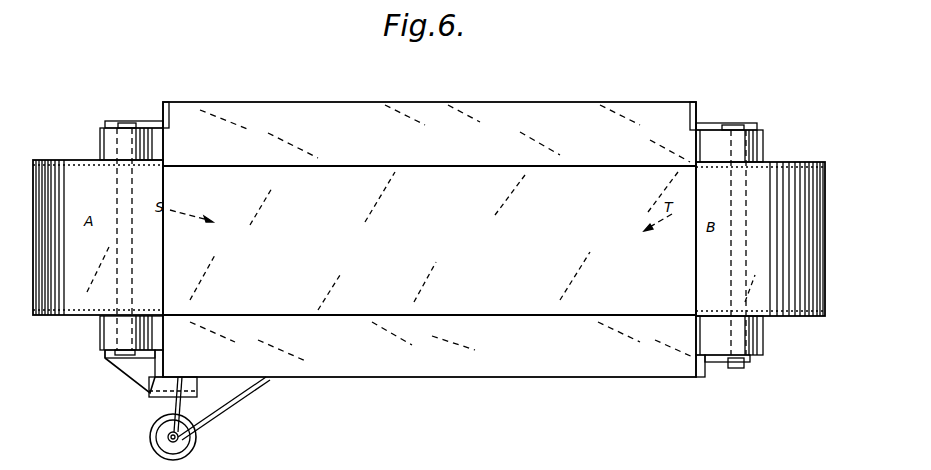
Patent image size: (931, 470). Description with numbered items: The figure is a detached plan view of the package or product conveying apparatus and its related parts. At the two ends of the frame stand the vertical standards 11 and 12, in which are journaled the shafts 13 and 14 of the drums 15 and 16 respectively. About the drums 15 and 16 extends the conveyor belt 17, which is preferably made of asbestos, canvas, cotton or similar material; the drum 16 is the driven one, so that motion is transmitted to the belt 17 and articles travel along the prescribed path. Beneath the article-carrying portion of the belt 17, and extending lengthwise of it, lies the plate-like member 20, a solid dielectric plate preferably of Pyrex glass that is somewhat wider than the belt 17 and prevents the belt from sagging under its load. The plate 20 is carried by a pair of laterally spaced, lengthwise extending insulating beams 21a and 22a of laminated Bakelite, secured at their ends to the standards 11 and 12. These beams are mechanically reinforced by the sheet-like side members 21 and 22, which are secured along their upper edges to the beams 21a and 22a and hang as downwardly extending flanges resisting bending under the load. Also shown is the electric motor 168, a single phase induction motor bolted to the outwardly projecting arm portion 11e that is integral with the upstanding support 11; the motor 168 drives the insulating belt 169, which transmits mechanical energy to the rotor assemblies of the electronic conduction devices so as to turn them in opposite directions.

The vertical standard 11 is at (102, 141).
The outwardly projecting arm portion 11e is at (127, 366).
The vertical standard 12 is at (760, 138).
The shaft 13 is at (126, 122).
The shaft 14 is at (740, 126).
The drum 15 is at (60, 160).
The drum 16 is at (796, 162).
The conveyor belt 17 is at (392, 172).
The plate-like member 20 is at (432, 104).
The side member 21 is at (147, 122).
The insulating beam 21a is at (166, 110).
The side member 22 is at (163, 353).
The insulating beam 22a is at (158, 372).
The electric motor 168 is at (196, 442).
The belt 169 is at (244, 392).